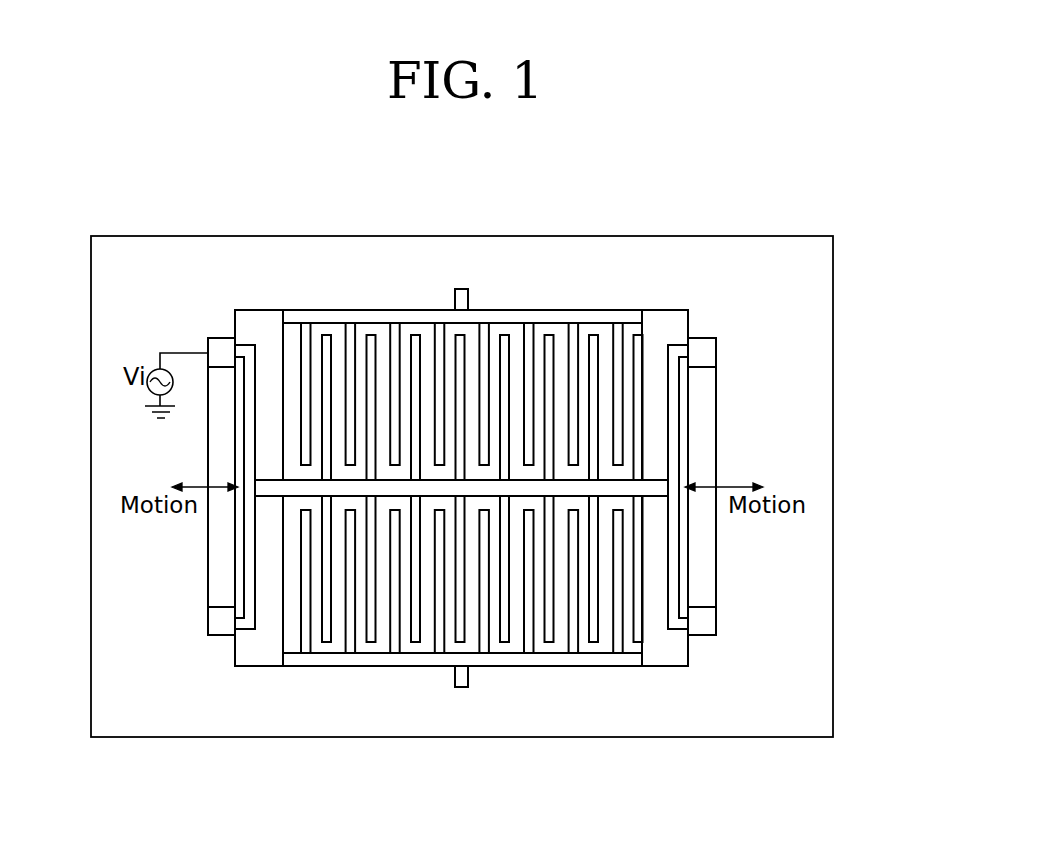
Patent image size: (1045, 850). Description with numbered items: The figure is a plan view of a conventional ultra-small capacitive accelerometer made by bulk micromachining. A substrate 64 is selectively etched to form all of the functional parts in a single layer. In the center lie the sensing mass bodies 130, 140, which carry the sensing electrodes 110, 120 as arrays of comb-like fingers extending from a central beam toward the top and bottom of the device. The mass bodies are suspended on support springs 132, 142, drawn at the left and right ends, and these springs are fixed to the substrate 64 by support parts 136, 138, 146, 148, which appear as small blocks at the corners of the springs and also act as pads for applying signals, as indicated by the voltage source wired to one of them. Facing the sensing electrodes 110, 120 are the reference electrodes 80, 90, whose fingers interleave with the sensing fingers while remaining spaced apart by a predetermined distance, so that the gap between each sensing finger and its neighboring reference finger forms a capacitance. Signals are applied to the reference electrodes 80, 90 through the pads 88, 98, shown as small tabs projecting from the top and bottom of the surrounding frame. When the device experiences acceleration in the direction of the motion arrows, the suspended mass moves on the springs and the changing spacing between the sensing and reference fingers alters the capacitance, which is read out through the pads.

The substrate 64 is at (657, 255).
The reference electrode 80 is at (300, 377).
The pad 88 is at (462, 295).
The reference electrode 90 is at (300, 600).
The pad 98 is at (462, 680).
The sensing electrode 110 is at (317, 355).
The sensing electrode 120 is at (322, 626).
The sensing mass body 130 is at (272, 487).
The support spring 132 is at (243, 432).
The support part 136 is at (218, 345).
The support part 138 is at (222, 636).
The sensing mass body 140 is at (668, 475).
The support spring 142 is at (685, 412).
The support part 146 is at (707, 352).
The support part 148 is at (707, 625).